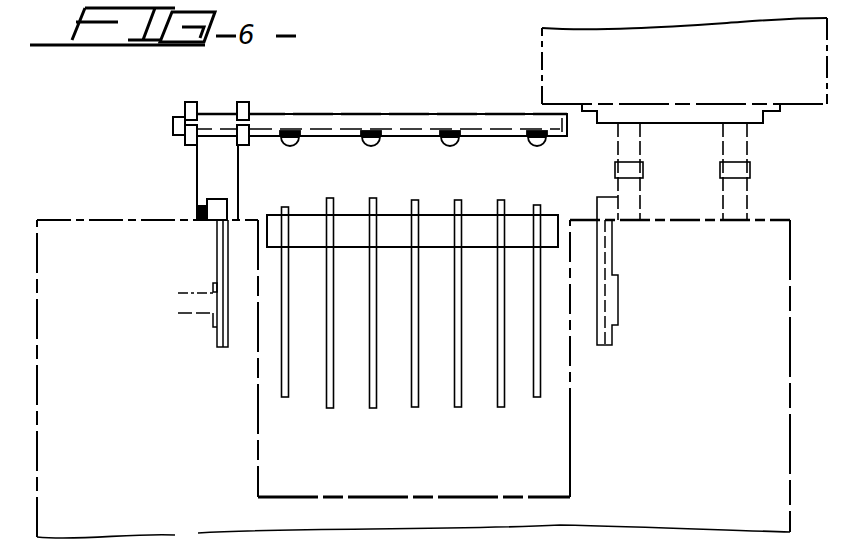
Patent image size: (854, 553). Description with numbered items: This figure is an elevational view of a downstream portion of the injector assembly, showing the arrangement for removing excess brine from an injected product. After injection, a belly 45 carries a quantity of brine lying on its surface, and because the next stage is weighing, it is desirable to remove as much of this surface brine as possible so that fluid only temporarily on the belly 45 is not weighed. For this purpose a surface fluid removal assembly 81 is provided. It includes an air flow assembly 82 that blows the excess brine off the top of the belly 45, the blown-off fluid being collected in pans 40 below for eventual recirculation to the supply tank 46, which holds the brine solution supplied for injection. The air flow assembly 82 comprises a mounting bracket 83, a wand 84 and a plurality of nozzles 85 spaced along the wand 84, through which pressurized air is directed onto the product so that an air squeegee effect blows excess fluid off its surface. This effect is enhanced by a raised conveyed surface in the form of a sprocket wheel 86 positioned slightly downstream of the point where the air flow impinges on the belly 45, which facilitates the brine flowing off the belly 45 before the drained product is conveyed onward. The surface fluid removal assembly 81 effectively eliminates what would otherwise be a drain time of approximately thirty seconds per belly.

The pans 40 is at (571, 418).
The belly 45 is at (515, 225).
The supply tank 46 is at (683, 82).
The surface fluid removal assembly 81 is at (162, 123).
The air flow assembly 82 is at (355, 98).
The mounting bracket 83 is at (215, 170).
The wand 84 is at (297, 113).
The nozzles 85 is at (452, 131).
The sprocket wheel 86 is at (371, 414).